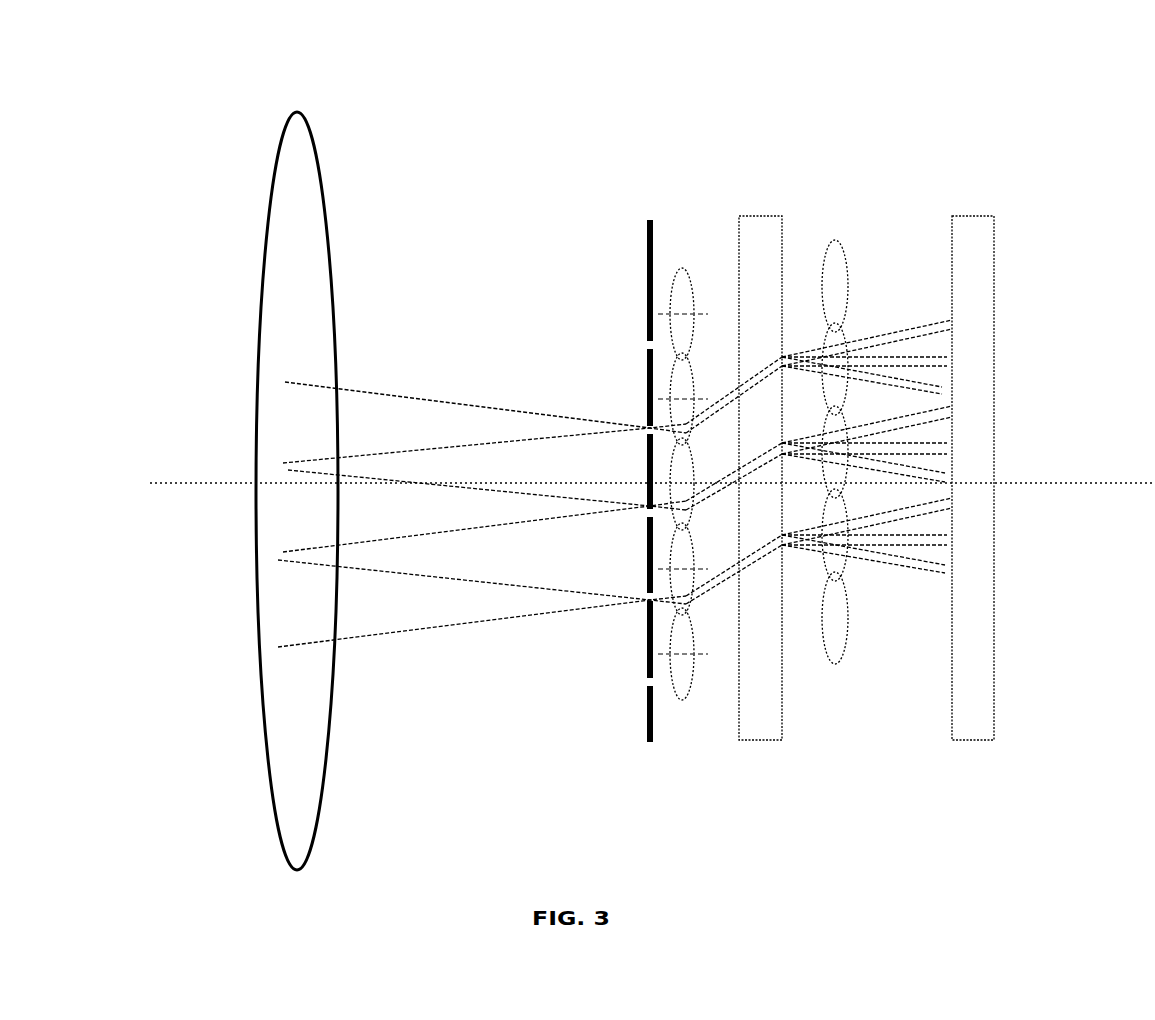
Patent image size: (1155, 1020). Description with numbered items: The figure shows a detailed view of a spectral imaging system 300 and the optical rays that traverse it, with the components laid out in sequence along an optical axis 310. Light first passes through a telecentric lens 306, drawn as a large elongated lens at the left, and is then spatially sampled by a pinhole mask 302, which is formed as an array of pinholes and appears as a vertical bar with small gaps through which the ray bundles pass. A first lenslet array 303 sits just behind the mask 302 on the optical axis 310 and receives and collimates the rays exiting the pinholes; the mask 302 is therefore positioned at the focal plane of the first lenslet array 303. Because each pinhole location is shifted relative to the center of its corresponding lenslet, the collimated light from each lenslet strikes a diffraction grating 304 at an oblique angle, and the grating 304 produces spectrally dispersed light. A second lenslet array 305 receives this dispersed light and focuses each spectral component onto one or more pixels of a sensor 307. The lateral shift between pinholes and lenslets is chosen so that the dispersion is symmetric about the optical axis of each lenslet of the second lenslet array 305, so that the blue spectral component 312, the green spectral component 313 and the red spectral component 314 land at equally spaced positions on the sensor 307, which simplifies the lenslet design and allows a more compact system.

The spectral imaging system 300 is at (577, 138).
The pinhole mask 302 is at (648, 247).
The first lenslet array 303 is at (684, 268).
The diffraction grating 304 is at (752, 216).
The second lenslet array 305 is at (833, 240).
The telecentric lens 306 is at (297, 113).
The sensor 307 is at (968, 216).
The optical axis 310 is at (1117, 480).
The blue spectral component 312 is at (927, 393).
The green spectral component 313 is at (908, 358).
The red spectral component 314 is at (877, 330).